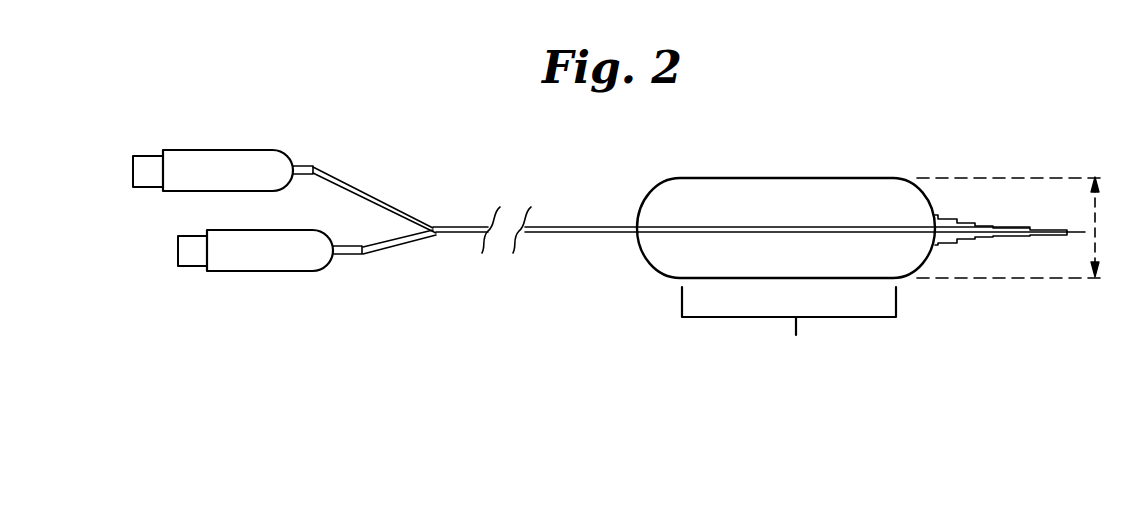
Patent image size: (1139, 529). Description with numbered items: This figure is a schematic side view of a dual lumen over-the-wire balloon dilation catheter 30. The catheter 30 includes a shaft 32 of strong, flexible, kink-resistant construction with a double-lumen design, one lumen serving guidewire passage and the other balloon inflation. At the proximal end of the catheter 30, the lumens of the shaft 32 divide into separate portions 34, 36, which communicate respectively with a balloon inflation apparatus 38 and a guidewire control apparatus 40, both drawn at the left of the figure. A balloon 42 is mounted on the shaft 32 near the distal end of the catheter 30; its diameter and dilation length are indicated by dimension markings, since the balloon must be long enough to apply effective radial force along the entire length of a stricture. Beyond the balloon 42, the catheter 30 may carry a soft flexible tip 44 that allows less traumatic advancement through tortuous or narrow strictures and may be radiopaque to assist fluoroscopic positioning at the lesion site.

The OTW balloon dilation catheter 30 is at (595, 258).
The shaft 32 is at (467, 226).
The separate portion 34 is at (343, 177).
The separate portion 36 is at (390, 251).
The balloon inflation apparatus 38 is at (238, 150).
The guidewire control apparatus 40 is at (273, 272).
The balloon 42 is at (792, 178).
The soft flexible tip 44 is at (977, 224).